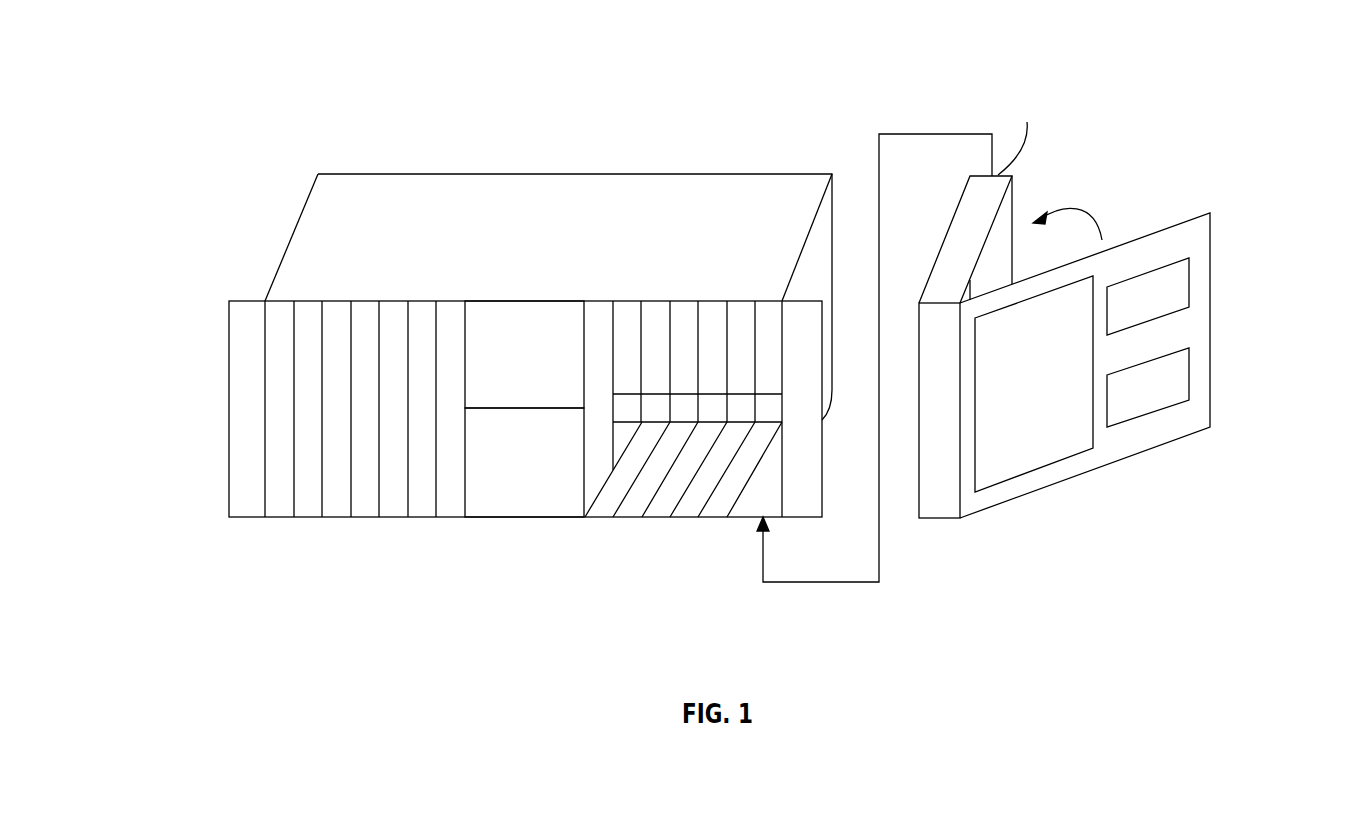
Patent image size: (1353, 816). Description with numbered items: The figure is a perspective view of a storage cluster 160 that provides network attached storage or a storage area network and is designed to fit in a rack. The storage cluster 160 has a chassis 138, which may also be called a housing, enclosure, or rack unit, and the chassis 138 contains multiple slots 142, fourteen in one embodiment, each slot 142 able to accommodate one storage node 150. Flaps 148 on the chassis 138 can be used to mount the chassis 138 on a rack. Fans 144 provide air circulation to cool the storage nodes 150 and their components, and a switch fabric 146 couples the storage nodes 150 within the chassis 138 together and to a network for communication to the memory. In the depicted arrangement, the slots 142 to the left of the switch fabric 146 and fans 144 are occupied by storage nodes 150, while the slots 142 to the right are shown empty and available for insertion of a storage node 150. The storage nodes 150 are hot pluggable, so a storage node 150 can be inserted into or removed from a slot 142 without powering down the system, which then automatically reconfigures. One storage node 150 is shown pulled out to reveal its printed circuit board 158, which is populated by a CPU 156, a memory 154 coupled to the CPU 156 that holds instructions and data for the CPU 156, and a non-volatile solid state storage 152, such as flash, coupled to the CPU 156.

The storage cluster 160 is at (243, 74).
The chassis 138 is at (387, 175).
The flaps 148 is at (228, 407).
The storage node 150 is at (280, 518).
The switch fabric 146 is at (528, 300).
The fans 144 is at (523, 518).
The slot 142 is at (752, 518).
The printed circuit board 158 is at (1210, 237).
The non-volatile solid state storage 152 is at (1033, 470).
The memory 154 is at (1148, 270).
The CPU 156 is at (1190, 372).